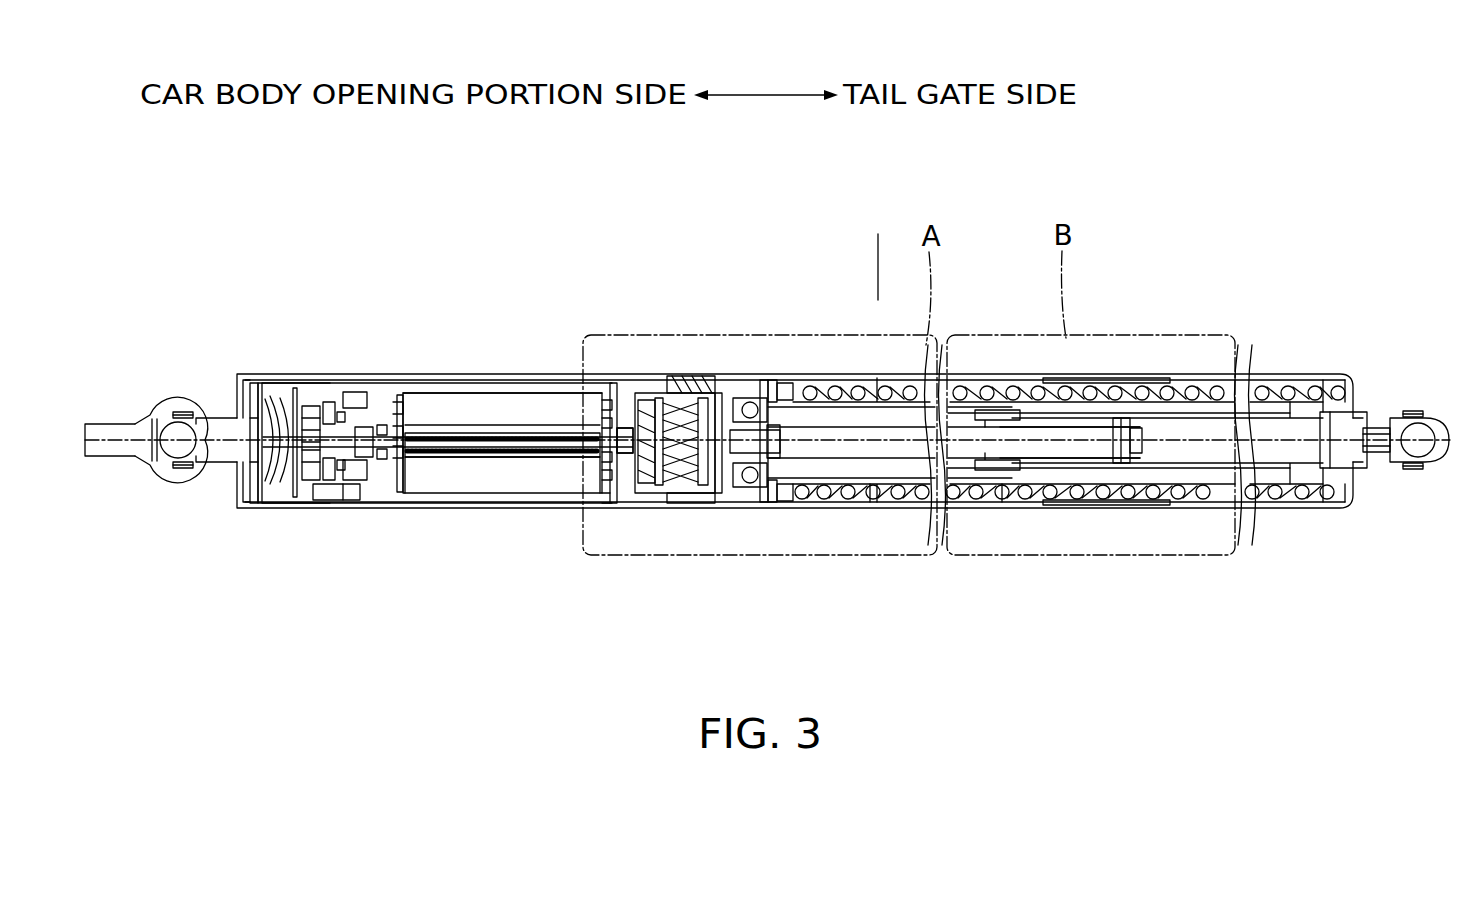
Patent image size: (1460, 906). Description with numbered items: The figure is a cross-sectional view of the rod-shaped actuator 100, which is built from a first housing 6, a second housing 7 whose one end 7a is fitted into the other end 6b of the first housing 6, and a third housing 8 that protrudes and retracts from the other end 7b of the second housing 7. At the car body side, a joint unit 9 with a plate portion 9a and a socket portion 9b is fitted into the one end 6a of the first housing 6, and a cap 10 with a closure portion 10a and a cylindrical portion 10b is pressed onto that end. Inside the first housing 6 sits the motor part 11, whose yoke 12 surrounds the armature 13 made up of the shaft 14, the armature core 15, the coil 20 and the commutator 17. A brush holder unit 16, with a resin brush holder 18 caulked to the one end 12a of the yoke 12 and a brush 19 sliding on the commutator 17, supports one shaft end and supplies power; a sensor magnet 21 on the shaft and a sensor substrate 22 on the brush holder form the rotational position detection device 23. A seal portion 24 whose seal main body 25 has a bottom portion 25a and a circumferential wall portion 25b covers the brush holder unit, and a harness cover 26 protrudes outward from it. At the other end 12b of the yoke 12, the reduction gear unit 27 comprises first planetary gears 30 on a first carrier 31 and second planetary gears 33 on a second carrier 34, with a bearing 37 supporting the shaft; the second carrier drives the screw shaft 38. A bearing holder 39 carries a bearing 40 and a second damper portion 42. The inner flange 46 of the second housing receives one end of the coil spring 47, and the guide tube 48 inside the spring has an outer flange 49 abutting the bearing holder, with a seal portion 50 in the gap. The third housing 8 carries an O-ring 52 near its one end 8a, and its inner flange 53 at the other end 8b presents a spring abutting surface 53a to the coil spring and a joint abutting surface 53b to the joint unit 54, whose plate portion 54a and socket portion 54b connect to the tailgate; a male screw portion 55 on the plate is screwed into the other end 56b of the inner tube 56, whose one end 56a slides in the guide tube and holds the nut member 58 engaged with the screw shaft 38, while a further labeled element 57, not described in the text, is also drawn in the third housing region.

The actuator 100 is at (882, 228).
The harness cover 26 is at (106, 422).
The joint unit 9 is at (179, 368).
The plate portion 9a is at (187, 416).
The socket portion 9b is at (160, 420).
The cap 10 is at (774, 510).
The closure portion 10a is at (228, 499).
The cylindrical portion 10b is at (275, 510).
The seal portion 24 is at (233, 497).
The seal main body 25 is at (303, 516).
The bottom portion 25a is at (238, 480).
The circumferential wall portion 25b is at (313, 380).
The rotational position detection device 23 is at (243, 346).
The sensor substrate 22 is at (277, 393).
The sensor magnet 21 is at (294, 400).
The one end of the first housing 6a is at (310, 405).
The brush 19 is at (349, 392).
The commutator 17 is at (374, 394).
The one end of the yoke 12a is at (364, 396).
The brush holder unit 16 is at (339, 494).
The brush holder 18 is at (358, 478).
The yoke 12 is at (502, 442).
The motor part 11 is at (486, 506).
The armature 13 is at (512, 386).
The armature core 15 is at (541, 410).
The first housing 6 is at (483, 376).
The shaft 14 is at (612, 388).
The coil 20 is at (607, 506).
The bearing 37 is at (627, 428).
The other end of the yoke 12b is at (701, 382).
The reduction gear unit 27 is at (665, 426).
The first planetary gears 30 is at (646, 470).
The first carrier 31 is at (660, 486).
The second planetary gears 33 is at (683, 403).
The second carrier 34 is at (702, 483).
The second damper portion 42 is at (724, 485).
The bearing holder 39 is at (747, 395).
The bearing 40 is at (746, 485).
The outer flange 49 is at (772, 502).
The seal portion 50 is at (782, 397).
The other end of the first housing 6b is at (848, 394).
The one end of the second housing 7a is at (893, 378).
The guide tube 48 is at (888, 504).
The second housing 7 is at (971, 376).
The screw shaft 38 is at (918, 470).
The inner flange 46 is at (815, 393).
The one end of the third housing 8a is at (1128, 503).
The one end of the inner tube 56a is at (1001, 410).
The nut member 58 is at (1040, 468).
The O-ring 52 is at (1090, 378).
The other end of the second housing 7b is at (1152, 376).
The coil spring 47 is at (1006, 498).
The tube step 57 is at (1288, 417).
The inner flange 53 is at (1375, 404).
The spring abutting surface 53a is at (1322, 380).
The joint abutting surface 53b is at (1370, 394).
The male screw portion 55 is at (1333, 458).
The inner tube 56 is at (1287, 480).
The other end of the inner tube 56b is at (1310, 476).
The third housing 8 is at (1364, 372).
The other end of the third housing 8b is at (1338, 388).
The joint unit 54 is at (1391, 527).
The plate portion 54a is at (1365, 472).
The socket portion 54b is at (1396, 478).